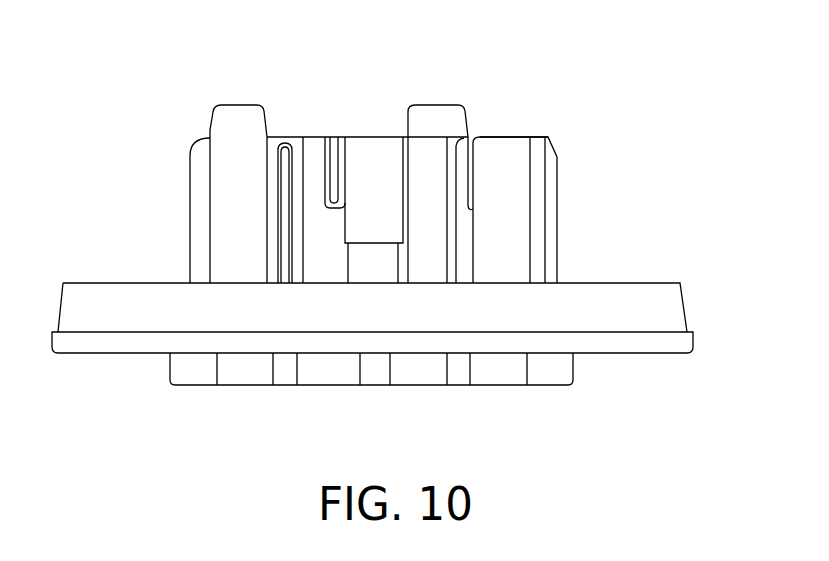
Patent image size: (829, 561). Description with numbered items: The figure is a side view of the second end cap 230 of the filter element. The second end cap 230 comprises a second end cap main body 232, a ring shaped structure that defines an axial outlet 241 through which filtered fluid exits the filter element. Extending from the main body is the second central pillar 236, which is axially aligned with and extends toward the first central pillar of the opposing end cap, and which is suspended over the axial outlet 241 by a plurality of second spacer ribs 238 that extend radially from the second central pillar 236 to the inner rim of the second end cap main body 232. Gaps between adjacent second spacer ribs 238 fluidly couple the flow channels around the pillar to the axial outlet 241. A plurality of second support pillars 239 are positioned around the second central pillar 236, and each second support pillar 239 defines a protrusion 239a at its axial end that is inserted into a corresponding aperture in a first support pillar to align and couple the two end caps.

The second end cap 230 is at (518, 110).
The second end cap main body 232 is at (95, 347).
The second central pillar 236 is at (373, 147).
The second spacer ribs 238 is at (198, 175).
The second support pillars 239 is at (223, 255).
The protrusion 239a is at (445, 108).
The axial outlet 241 is at (263, 373).